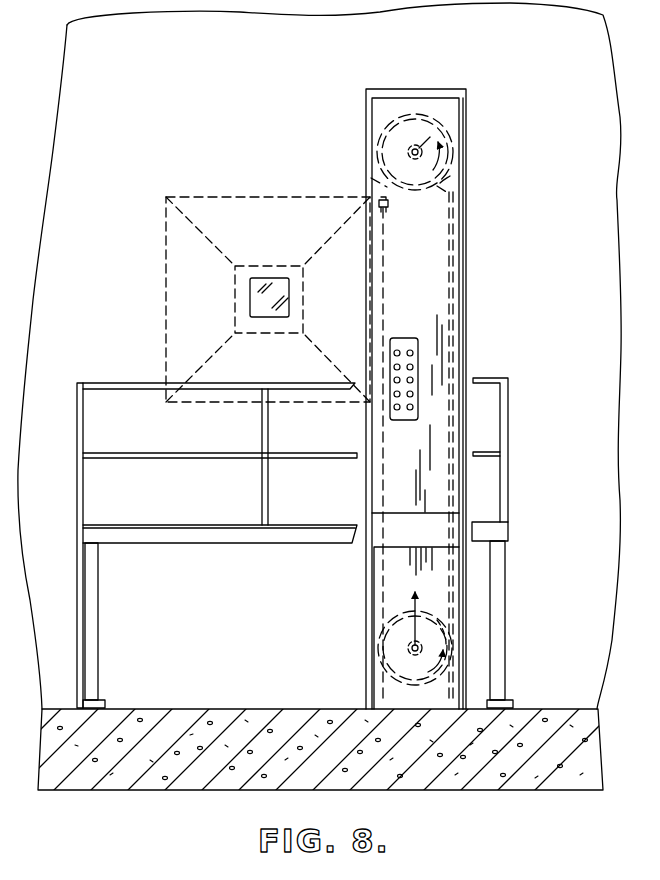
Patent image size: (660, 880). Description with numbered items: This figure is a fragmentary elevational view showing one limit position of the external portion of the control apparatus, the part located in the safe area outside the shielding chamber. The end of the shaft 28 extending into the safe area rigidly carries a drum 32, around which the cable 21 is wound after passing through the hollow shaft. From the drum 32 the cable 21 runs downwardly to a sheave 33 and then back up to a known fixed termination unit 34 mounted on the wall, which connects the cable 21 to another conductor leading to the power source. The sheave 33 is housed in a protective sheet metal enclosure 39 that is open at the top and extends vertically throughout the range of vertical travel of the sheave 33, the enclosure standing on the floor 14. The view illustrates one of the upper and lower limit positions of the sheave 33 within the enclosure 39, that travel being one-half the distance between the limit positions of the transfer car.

The floor 14 is at (150, 708).
The cable 21 is at (385, 275).
The shaft 28 is at (432, 133).
The drum 32 is at (430, 188).
The sheave 33 is at (385, 672).
The fixed termination unit 34 is at (373, 202).
The protective sheet metal enclosure 39 is at (466, 258).